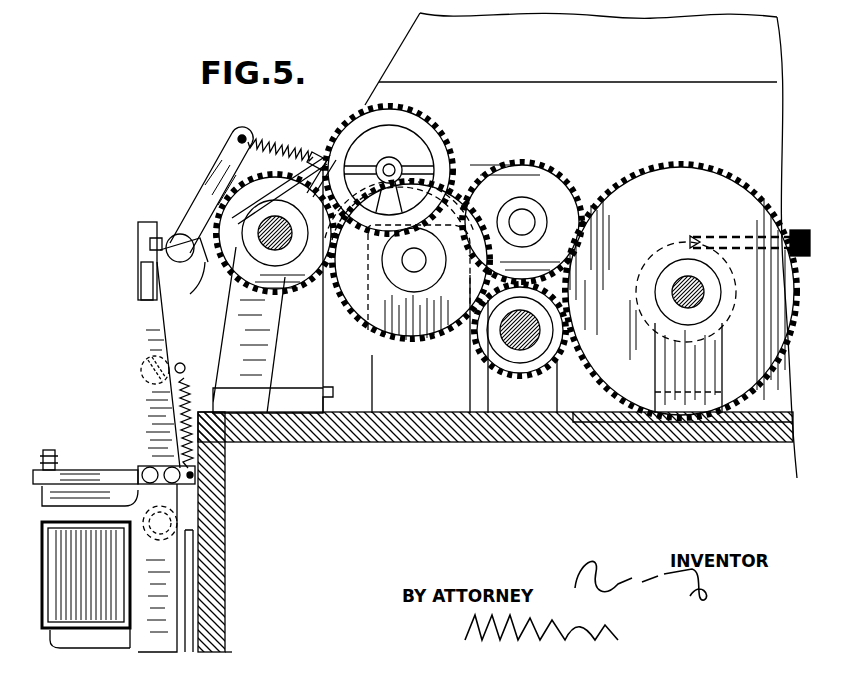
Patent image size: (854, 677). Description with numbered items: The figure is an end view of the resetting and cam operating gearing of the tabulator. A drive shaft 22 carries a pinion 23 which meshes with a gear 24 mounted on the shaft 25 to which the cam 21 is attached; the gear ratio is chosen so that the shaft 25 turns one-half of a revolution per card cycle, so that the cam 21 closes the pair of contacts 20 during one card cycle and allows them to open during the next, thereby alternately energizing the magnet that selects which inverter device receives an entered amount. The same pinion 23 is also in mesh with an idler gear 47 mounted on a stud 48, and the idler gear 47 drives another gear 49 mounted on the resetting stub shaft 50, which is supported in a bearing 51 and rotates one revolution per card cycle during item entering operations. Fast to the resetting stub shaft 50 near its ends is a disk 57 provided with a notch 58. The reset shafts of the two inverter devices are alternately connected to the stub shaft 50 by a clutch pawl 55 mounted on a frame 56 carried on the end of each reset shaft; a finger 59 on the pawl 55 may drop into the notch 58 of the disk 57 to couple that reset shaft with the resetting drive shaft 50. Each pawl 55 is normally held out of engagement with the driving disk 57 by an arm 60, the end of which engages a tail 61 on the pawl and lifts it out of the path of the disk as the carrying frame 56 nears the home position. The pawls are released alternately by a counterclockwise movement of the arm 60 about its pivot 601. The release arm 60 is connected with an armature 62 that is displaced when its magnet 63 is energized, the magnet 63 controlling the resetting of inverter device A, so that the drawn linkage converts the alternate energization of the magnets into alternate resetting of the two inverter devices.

The contacts 20 is at (713, 238).
The cam 21 is at (632, 285).
The drive shaft 22 is at (517, 342).
The pinion 23 is at (550, 362).
The gear 24 is at (632, 385).
The shaft 25 is at (700, 304).
The idler gear 47 is at (372, 318).
The stud 48 is at (408, 262).
The gear 49 is at (285, 277).
The resetting stub shaft 50 is at (262, 245).
The bearing 51 is at (252, 358).
The clutch pawl 55 is at (222, 198).
The frame 56 is at (184, 270).
The disk 57 is at (255, 248).
The notch 58 is at (204, 230).
The finger 59 is at (229, 178).
The arm 60 is at (146, 241).
The tail 61 is at (160, 250).
The armature 62 is at (92, 502).
The magnet 63 is at (98, 582).
The pivot 601 is at (172, 513).